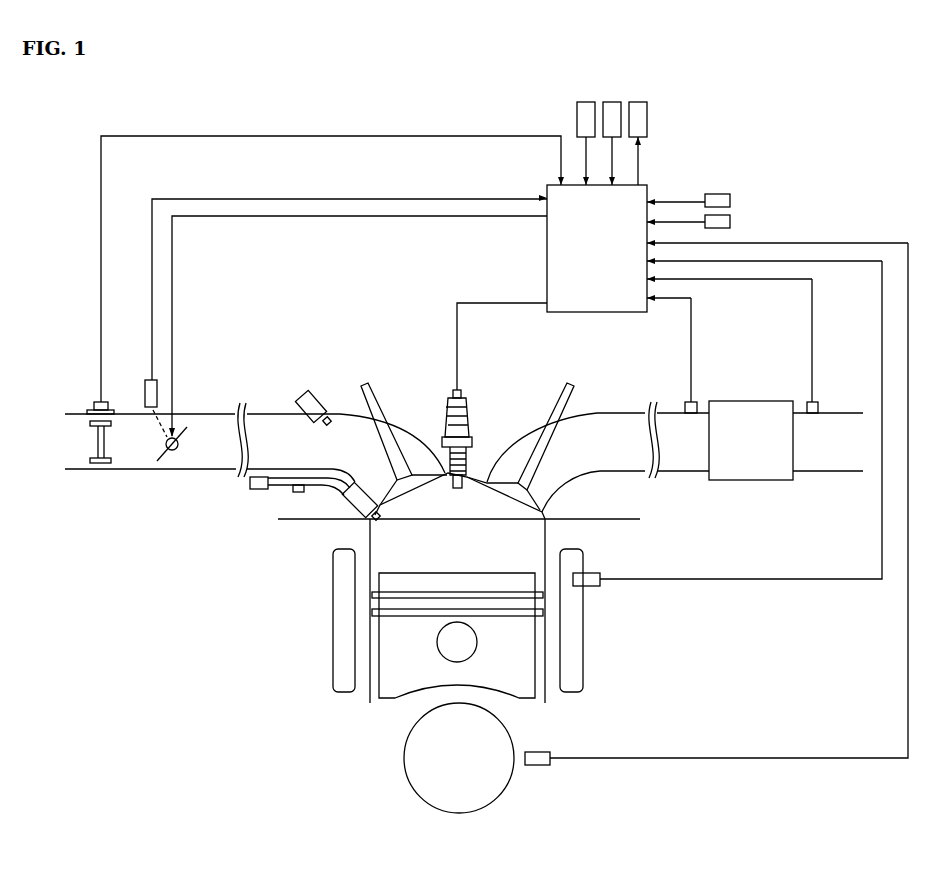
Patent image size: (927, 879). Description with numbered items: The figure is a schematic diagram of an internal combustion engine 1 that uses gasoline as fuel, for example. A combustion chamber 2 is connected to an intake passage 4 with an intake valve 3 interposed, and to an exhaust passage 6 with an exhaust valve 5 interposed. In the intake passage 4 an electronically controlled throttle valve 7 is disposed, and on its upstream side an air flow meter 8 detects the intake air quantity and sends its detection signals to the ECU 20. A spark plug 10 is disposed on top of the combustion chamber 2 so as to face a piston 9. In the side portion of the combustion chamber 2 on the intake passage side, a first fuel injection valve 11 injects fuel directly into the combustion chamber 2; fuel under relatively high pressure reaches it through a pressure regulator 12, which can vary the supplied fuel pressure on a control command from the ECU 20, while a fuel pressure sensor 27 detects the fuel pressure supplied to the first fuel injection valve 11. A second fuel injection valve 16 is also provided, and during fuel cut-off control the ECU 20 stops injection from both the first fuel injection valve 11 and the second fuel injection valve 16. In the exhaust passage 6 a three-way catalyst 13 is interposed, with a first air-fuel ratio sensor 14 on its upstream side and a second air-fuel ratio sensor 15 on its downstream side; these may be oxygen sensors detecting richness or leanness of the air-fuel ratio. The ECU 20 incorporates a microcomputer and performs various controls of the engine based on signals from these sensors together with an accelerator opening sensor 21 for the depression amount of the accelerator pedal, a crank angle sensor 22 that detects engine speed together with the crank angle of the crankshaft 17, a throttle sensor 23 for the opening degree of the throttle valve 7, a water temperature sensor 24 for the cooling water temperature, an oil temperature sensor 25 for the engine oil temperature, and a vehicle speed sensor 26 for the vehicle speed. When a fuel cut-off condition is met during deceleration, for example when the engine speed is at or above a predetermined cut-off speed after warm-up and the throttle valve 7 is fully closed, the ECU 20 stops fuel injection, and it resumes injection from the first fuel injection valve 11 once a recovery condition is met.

The internal combustion engine 1 is at (470, 378).
The combustion chamber 2 is at (552, 512).
The intake valve 3 is at (373, 408).
The intake passage 4 is at (190, 450).
The exhaust valve 5 is at (548, 405).
The exhaust passage 6 is at (622, 412).
The throttle valve 7 is at (163, 455).
The air flow meter 8 is at (97, 441).
The piston 9 is at (390, 676).
The spark plug 10 is at (451, 398).
The first fuel injection valve 11 is at (350, 497).
The pressure regulator 12 is at (647, 118).
The three-way catalyst 13 is at (757, 418).
The first air-fuel ratio sensor 14 is at (692, 401).
The second air-fuel ratio sensor 15 is at (814, 401).
The second fuel injection valve 16 is at (305, 395).
The crankshaft 17 is at (404, 762).
The ECU 20 is at (559, 262).
The accelerator opening sensor 21 is at (577, 116).
The crank angle sensor 22 is at (540, 752).
The throttle sensor 23 is at (144, 395).
The water temperature sensor 24 is at (590, 586).
The oil temperature sensor 25 is at (612, 102).
The vehicle speed sensor 26 is at (716, 194).
The fuel pressure sensor 27 is at (730, 221).